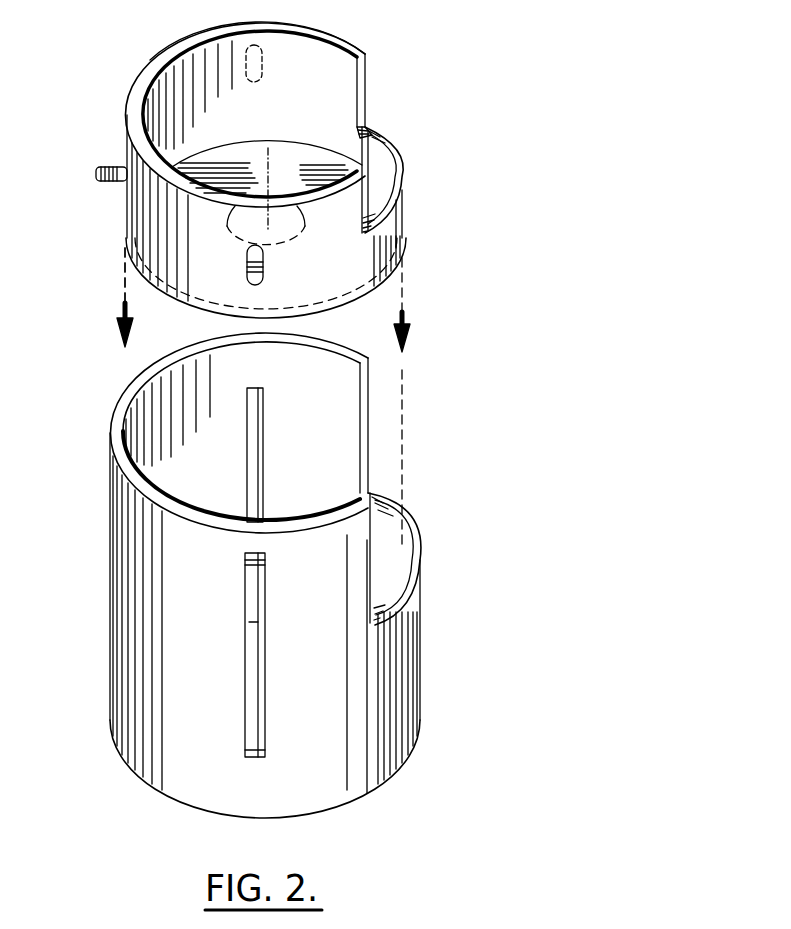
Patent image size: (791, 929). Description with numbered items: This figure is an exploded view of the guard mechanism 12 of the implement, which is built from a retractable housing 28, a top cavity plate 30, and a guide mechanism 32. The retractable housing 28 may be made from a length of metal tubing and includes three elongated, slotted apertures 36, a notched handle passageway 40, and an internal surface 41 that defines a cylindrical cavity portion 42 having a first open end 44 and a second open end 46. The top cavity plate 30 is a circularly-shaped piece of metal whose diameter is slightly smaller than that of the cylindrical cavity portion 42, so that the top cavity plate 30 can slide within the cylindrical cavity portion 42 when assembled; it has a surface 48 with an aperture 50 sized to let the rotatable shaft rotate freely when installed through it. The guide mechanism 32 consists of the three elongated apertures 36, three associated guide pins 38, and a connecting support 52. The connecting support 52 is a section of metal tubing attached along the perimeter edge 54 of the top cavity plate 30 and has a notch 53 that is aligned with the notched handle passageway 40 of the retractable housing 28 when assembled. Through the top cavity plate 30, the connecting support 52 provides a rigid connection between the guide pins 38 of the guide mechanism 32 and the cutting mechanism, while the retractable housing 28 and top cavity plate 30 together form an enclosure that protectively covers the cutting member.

The guard mechanism 12 is at (423, 450).
The retractable housing 28 is at (392, 688).
The top cavity plate 30 is at (378, 153).
The guide mechanism 32 is at (90, 133).
The elongated apertures 36 is at (256, 436).
The guide pins 38 is at (272, 47).
The notched handle passageway 40 is at (403, 467).
The internal surface 41 is at (338, 398).
The cylindrical cavity portion 42 is at (231, 452).
The first open end 44 is at (176, 390).
The second open end 46 is at (190, 806).
The surface 48 is at (213, 165).
The aperture 50 is at (325, 166).
The connecting support 52 is at (182, 52).
The notch 53 is at (413, 122).
The perimeter edge 54 is at (393, 249).